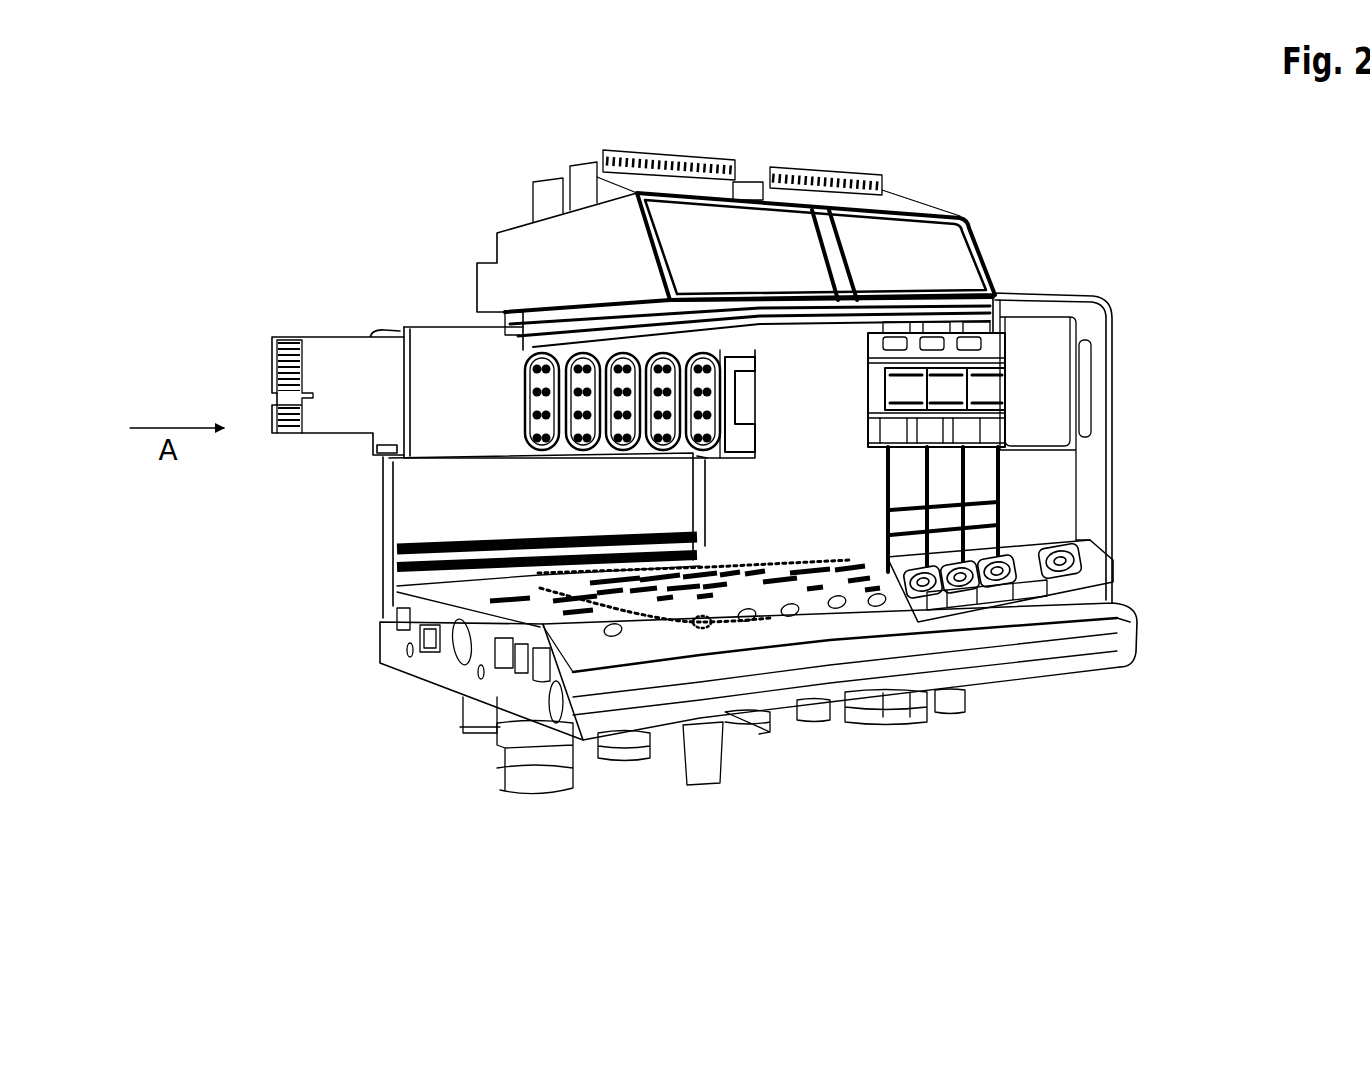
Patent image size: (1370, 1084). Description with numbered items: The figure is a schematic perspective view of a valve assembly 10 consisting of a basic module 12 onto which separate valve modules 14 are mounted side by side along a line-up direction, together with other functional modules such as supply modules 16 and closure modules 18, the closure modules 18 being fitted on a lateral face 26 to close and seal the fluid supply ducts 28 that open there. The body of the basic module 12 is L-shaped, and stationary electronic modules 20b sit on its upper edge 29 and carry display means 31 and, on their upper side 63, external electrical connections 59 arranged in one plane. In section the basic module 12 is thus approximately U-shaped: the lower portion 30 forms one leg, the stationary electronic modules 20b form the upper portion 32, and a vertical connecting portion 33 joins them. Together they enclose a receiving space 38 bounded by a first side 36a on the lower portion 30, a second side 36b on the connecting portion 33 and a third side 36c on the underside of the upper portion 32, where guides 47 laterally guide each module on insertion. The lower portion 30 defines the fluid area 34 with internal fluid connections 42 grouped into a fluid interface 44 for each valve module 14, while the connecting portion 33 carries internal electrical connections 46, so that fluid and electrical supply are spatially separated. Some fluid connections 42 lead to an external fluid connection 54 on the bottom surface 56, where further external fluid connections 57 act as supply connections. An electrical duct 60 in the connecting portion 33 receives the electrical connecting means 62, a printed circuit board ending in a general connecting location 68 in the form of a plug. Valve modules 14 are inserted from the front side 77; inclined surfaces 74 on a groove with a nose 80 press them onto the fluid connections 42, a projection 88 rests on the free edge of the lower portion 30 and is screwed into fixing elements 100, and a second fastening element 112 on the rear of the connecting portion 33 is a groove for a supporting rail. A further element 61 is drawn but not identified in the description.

The valve assembly 10 is at (282, 214).
The basic module 12 is at (443, 705).
The valve modules 14 is at (983, 497).
The supply modules 16 is at (1033, 370).
The closure modules 18 is at (1093, 337).
The stationary electronic modules 20b is at (780, 242).
The lateral face 26 is at (358, 641).
The fluid supply ducts 28 is at (500, 668).
The upper edge 29 is at (442, 326).
The lower portion 30 is at (417, 665).
The display means 31 is at (947, 247).
The upper portion 32 is at (490, 226).
The connecting portion 33 is at (383, 495).
The fluid area 34 is at (735, 310).
The first side 36a is at (538, 585).
The second side 36b is at (535, 495).
The third side 36c is at (790, 306).
The receiving space 38 is at (637, 500).
The internal fluid connections 42 is at (836, 606).
The internal fluid interface 44 is at (740, 620).
The internal electrical connections 46 is at (516, 369).
The guides 47 is at (843, 362).
The external fluid connection 54 is at (627, 748).
The bottom surface 56 is at (1070, 666).
The further external fluid connections 57 is at (538, 770).
The external electrical connections 59 is at (690, 177).
The electrical duct 60 is at (377, 333).
The housing side face 61 is at (437, 366).
The electrical connecting means 62 is at (347, 358).
The upper side 63 is at (720, 548).
The general connecting location 68 is at (287, 338).
The inclined surfaces 74 is at (396, 593).
The front side 77 is at (1052, 407).
The nose 80 is at (383, 570).
The projection 88 is at (936, 602).
The fixing elements 100 is at (795, 614).
The second fastening element 112 is at (372, 536).